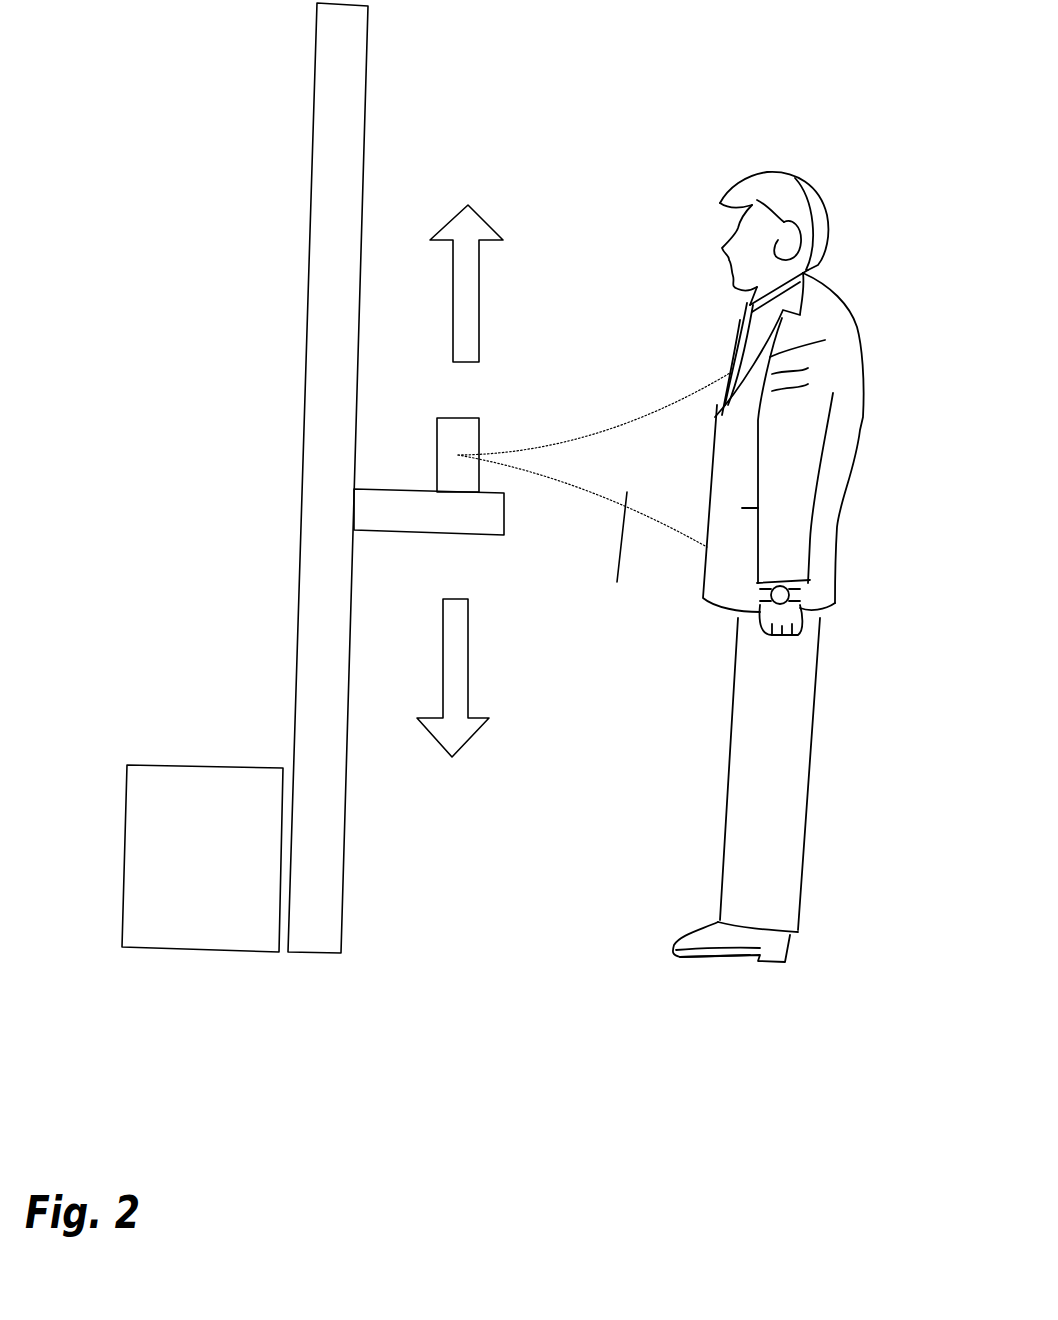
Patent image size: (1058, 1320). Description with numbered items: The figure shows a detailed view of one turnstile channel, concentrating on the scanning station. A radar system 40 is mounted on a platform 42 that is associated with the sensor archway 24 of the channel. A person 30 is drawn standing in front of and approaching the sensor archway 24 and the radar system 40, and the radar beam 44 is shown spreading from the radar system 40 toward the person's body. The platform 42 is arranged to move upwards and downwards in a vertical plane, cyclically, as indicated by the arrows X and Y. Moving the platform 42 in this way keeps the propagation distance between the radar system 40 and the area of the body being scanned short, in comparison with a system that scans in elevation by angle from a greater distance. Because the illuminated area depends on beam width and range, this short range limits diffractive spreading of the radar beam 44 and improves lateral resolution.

The sensor archway 24 is at (374, 918).
The radar system 40 is at (460, 429).
The platform 42 is at (410, 502).
The radar beam 44 is at (594, 487).
The person 30 is at (758, 808).
The arrow X is at (480, 269).
The arrow Y is at (468, 672).